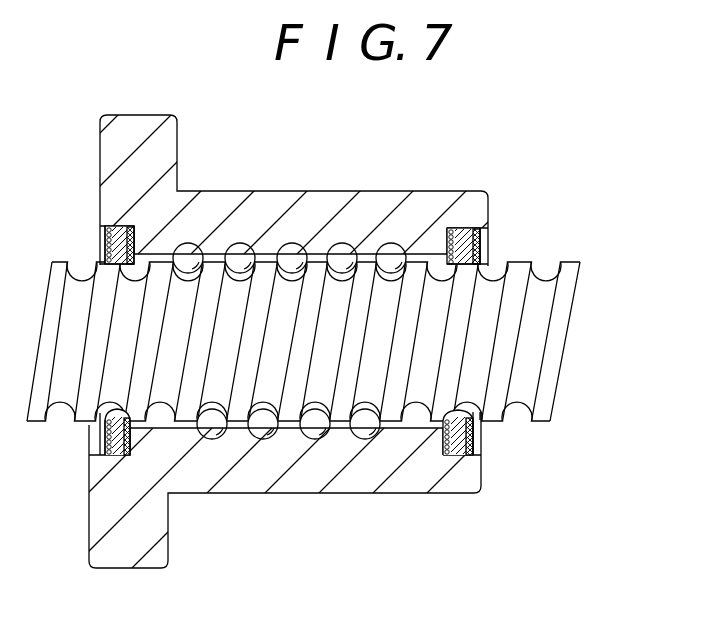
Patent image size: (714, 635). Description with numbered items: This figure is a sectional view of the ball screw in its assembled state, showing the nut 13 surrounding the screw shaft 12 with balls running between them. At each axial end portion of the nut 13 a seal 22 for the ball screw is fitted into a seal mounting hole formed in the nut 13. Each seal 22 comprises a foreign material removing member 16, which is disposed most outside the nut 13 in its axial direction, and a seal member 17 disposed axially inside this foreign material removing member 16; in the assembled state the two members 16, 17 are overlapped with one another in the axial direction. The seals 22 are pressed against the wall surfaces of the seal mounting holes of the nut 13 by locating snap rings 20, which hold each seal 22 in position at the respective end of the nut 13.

The screw shaft 12 is at (542, 312).
The nut 13 is at (341, 198).
The foreign material removing member 16 is at (118, 224).
The seal member 17 is at (128, 226).
The locating snap ring 20 is at (106, 243).
The seal 22 is at (296, 273).